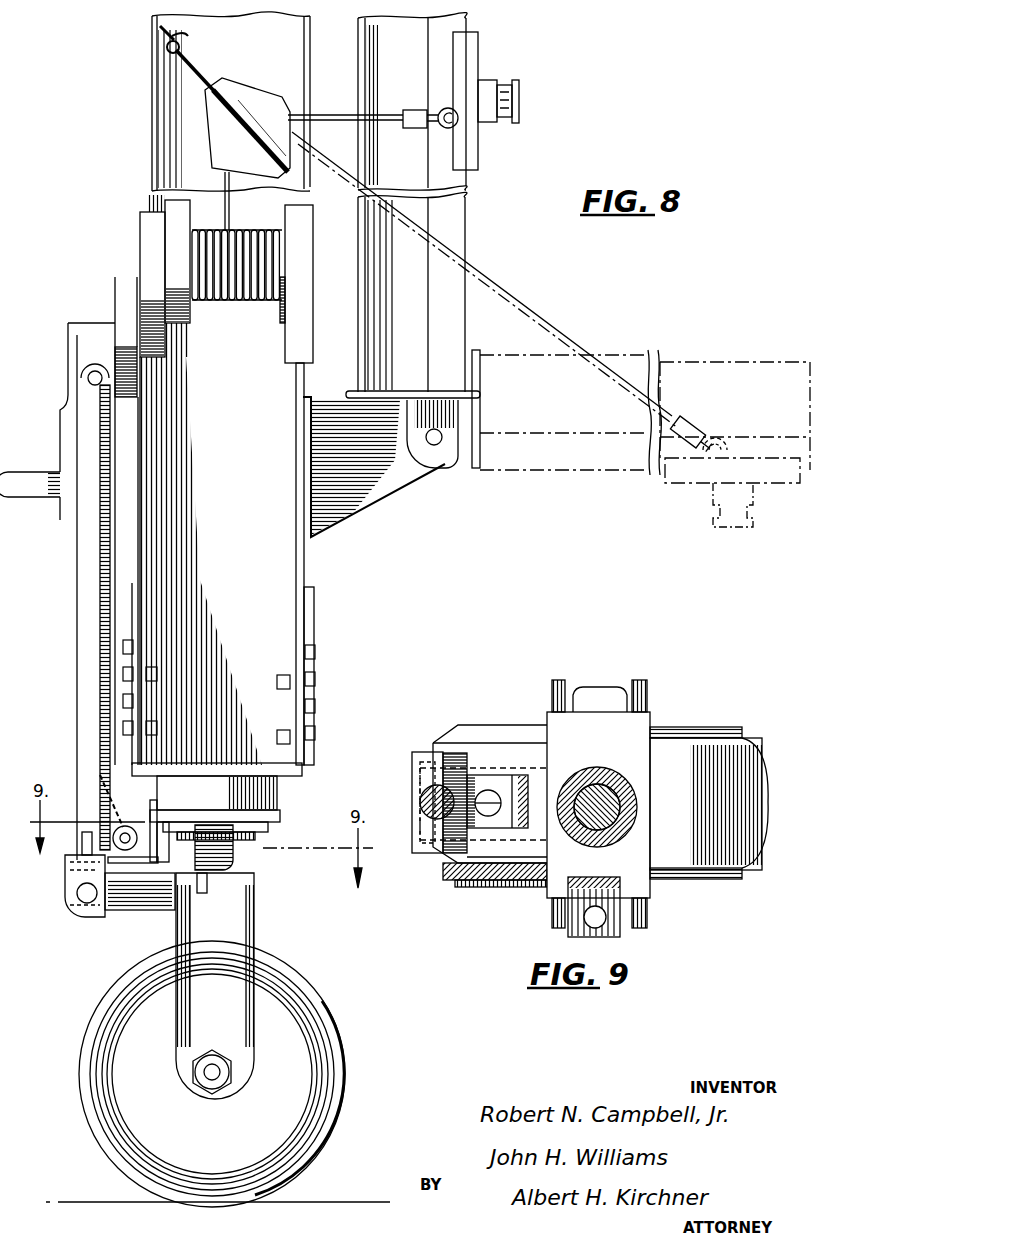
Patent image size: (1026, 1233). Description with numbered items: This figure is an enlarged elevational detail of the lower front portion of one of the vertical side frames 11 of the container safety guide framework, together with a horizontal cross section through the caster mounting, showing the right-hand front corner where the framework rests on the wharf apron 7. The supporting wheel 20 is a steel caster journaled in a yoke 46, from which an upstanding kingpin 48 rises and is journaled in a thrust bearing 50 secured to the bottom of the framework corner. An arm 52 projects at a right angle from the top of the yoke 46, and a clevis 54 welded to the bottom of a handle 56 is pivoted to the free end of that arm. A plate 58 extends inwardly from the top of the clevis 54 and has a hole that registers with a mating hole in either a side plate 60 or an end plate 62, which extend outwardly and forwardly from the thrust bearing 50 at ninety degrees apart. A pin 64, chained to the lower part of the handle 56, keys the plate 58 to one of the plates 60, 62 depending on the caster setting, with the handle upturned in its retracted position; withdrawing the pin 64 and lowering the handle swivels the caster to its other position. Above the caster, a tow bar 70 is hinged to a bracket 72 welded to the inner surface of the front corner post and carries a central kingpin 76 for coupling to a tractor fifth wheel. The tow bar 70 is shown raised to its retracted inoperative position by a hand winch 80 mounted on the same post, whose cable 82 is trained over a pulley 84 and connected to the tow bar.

In FIG. 8, the wharf apron 7 is at (325, 1202).
In FIG. 8, the vertical side frame 11 is at (152, 118).
In FIG. 8, the supporting wheel 20 is at (345, 1055).
In FIG. 9, the supporting wheel 20 is at (697, 885).
In FIG. 8, the yoke 46 is at (258, 905).
In FIG. 9, the yoke 46 is at (553, 880).
In FIG. 8, the kingpin 48 is at (198, 880).
In FIG. 9, the kingpin 48 is at (605, 800).
In FIG. 8, the thrust bearing 50 is at (278, 806).
In FIG. 8, the arm 52 is at (125, 913).
In FIG. 9, the arm 52 is at (540, 785).
In FIG. 8, the clevis 54 is at (65, 866).
In FIG. 9, the clevis 54 is at (416, 750).
In FIG. 8, the handle 56 is at (78, 600).
In FIG. 9, the handle 56 is at (432, 790).
In FIG. 8, the plate 58 is at (126, 828).
In FIG. 9, the plate 58 is at (482, 785).
In FIG. 8, the side plate 60 is at (150, 856).
In FIG. 9, the side plate 60 is at (512, 778).
In FIG. 8, the end plate 62 is at (240, 862).
In FIG. 9, the end plate 62 is at (578, 925).
In FIG. 8, the pin 64 is at (150, 830).
In FIG. 9, the pin 64 is at (470, 878).
In FIG. 8, the tow bar 70 is at (467, 240).
In FIG. 8, the bracket 72 is at (410, 470).
In FIG. 8, the kingpin 76 is at (508, 82).
In FIG. 8, the hand winch 80 is at (133, 262).
In FIG. 8, the cable 82 is at (300, 117).
In FIG. 8, the pulley 84 is at (252, 95).